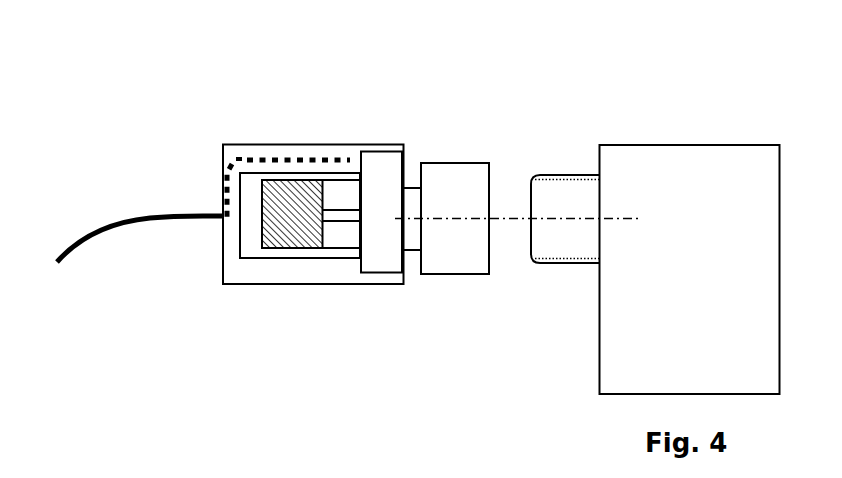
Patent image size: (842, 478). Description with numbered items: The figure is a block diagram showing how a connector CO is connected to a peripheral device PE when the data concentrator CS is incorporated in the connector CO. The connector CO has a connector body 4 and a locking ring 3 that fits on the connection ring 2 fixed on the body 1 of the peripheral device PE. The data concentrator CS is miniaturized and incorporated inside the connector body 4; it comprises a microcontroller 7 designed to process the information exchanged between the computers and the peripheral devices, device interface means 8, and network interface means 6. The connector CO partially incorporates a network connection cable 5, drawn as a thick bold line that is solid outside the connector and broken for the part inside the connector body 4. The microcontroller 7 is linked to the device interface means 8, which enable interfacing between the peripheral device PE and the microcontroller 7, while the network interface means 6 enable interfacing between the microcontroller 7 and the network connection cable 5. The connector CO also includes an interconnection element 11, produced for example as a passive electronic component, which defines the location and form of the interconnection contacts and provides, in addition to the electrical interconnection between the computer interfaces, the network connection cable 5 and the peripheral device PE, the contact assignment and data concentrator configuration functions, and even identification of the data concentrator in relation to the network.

The body of the peripheral device 1 is at (632, 145).
The connection ring 2 is at (563, 175).
The locking ring 3 is at (455, 163).
The connector body 4 is at (227, 146).
The network connection cable 5 is at (156, 212).
The network interface means 6 is at (340, 176).
The microcontroller 7 is at (280, 248).
The device interface means 8 is at (337, 248).
The interconnection element 11 is at (392, 273).
The peripheral device PE is at (694, 114).
The connector CO is at (182, 294).
The data concentrator CS is at (240, 258).